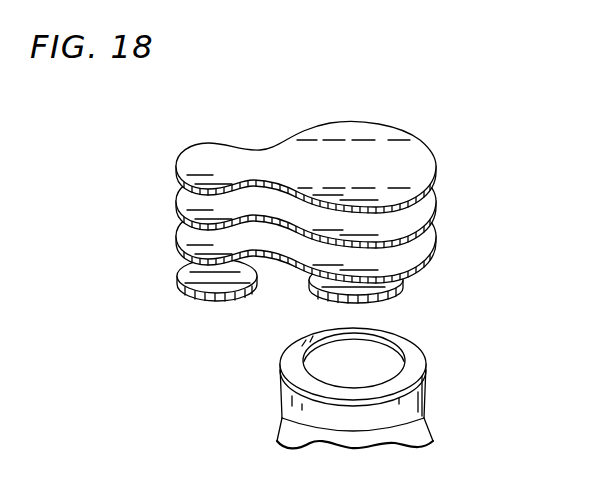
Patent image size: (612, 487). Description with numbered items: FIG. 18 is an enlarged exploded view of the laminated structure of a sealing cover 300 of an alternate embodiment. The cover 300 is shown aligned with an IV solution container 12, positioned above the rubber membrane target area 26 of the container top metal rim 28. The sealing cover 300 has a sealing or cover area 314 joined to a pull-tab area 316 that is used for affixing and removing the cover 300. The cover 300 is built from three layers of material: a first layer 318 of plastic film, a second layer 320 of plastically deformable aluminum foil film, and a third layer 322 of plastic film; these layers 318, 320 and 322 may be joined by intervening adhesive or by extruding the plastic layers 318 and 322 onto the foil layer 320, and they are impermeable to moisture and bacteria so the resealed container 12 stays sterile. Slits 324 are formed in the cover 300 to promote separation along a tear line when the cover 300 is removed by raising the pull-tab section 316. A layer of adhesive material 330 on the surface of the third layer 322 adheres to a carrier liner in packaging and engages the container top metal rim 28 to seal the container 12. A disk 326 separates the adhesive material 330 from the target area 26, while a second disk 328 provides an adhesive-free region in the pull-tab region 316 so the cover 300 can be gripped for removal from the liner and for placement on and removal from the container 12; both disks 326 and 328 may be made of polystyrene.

The sealing cover 300 is at (60, 82).
The IV solution container 12 is at (356, 388).
The target area 26 is at (315, 362).
The container top metal rim 28 is at (426, 382).
The sealing or cover area 314 is at (459, 118).
The pull-tab area 316 is at (146, 113).
The first layer 318 is at (307, 140).
The second layer 320 is at (435, 197).
The third layer 322 is at (430, 237).
The slits 324 is at (309, 187).
The disk 326 is at (318, 293).
The second disk 328 is at (231, 300).
The adhesive material 330 is at (418, 268).